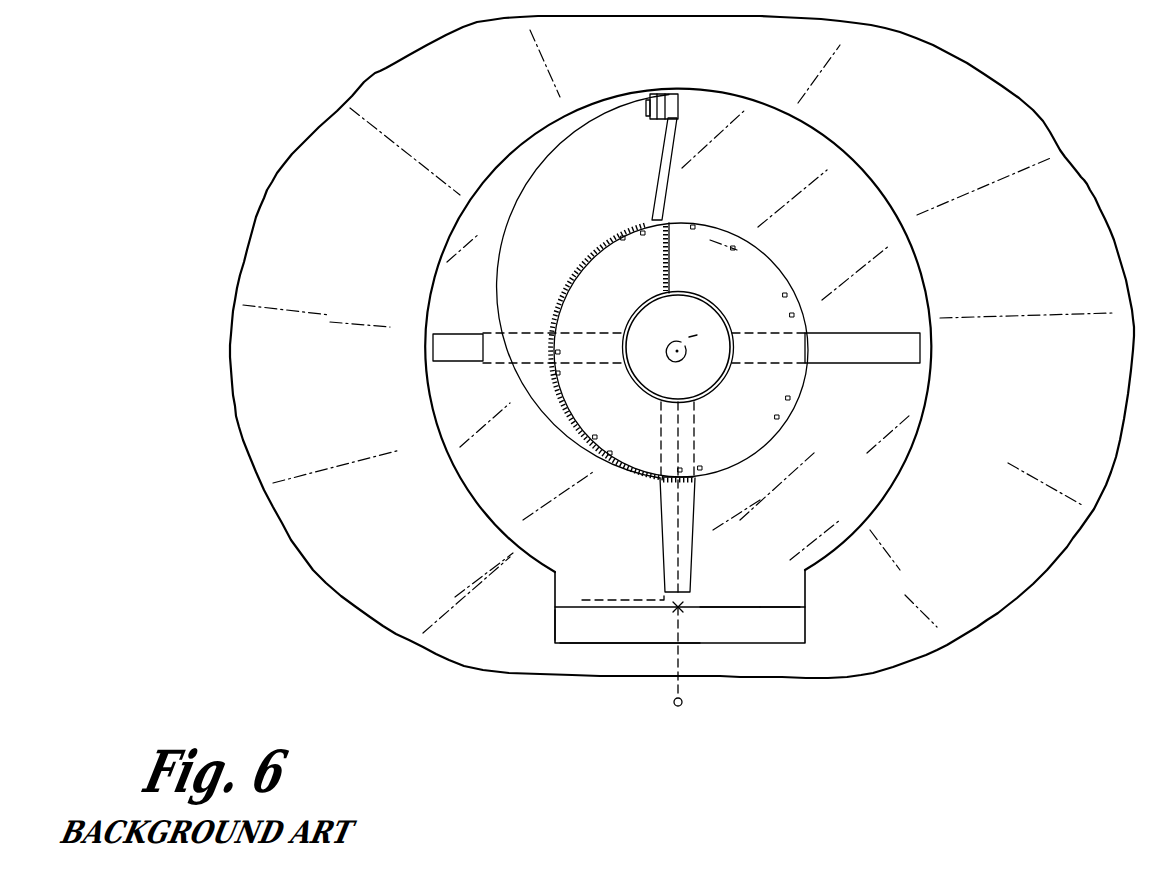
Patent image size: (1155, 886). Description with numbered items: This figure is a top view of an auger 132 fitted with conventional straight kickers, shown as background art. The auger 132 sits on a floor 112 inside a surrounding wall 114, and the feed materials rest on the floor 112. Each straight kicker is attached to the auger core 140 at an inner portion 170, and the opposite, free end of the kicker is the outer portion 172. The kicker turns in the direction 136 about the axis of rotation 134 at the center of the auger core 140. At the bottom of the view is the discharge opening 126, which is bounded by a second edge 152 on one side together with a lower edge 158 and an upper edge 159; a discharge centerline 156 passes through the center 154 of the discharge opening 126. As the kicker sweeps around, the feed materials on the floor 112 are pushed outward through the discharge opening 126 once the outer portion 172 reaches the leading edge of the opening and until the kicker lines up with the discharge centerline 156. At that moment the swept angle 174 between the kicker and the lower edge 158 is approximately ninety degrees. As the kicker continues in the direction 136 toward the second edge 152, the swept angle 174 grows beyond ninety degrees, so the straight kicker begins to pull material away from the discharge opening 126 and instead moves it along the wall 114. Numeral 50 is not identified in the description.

The wall 114 is at (1000, 591).
The floor 112 is at (512, 505).
The base 50 is at (805, 628).
The second edge 152 is at (552, 625).
The discharge opening 126 is at (592, 633).
The lower edge 158 is at (767, 607).
The upper edge 159 is at (720, 607).
The auger 132 is at (477, 300).
The direction 136 is at (545, 226).
The auger core 140 is at (728, 326).
The axis of rotation 134 is at (683, 350).
The outer portion 172 is at (877, 353).
The inner portion 170 is at (763, 357).
The swept angle 174 is at (663, 547).
The center 154 is at (672, 608).
The discharge centerline 156 is at (673, 704).